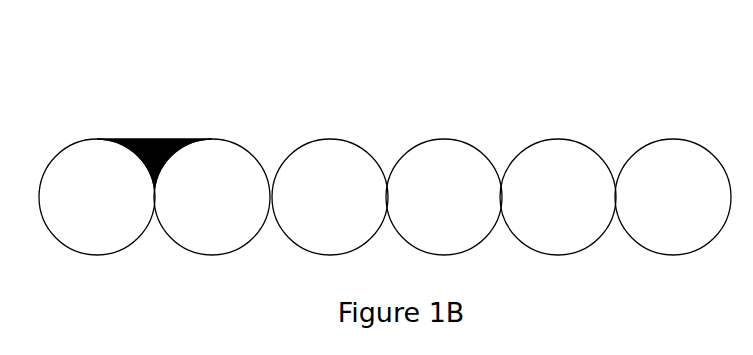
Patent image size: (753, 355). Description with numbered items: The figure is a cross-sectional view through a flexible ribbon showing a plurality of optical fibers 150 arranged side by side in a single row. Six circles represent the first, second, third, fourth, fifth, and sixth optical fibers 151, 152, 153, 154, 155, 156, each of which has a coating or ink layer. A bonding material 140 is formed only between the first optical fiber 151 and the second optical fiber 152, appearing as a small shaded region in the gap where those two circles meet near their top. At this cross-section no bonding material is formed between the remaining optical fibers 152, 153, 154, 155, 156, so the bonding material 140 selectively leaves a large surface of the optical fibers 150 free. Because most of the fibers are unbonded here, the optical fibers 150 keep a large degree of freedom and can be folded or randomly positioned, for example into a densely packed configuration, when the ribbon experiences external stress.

The bonding material 140 is at (155, 139).
The optical fibers 150 is at (385, 177).
The first optical fiber 151 is at (66, 212).
The second optical fiber 152 is at (183, 203).
The third optical fiber 153 is at (306, 202).
The fourth optical fiber 154 is at (418, 202).
The fifth optical fiber 155 is at (541, 212).
The sixth optical fiber 156 is at (653, 203).